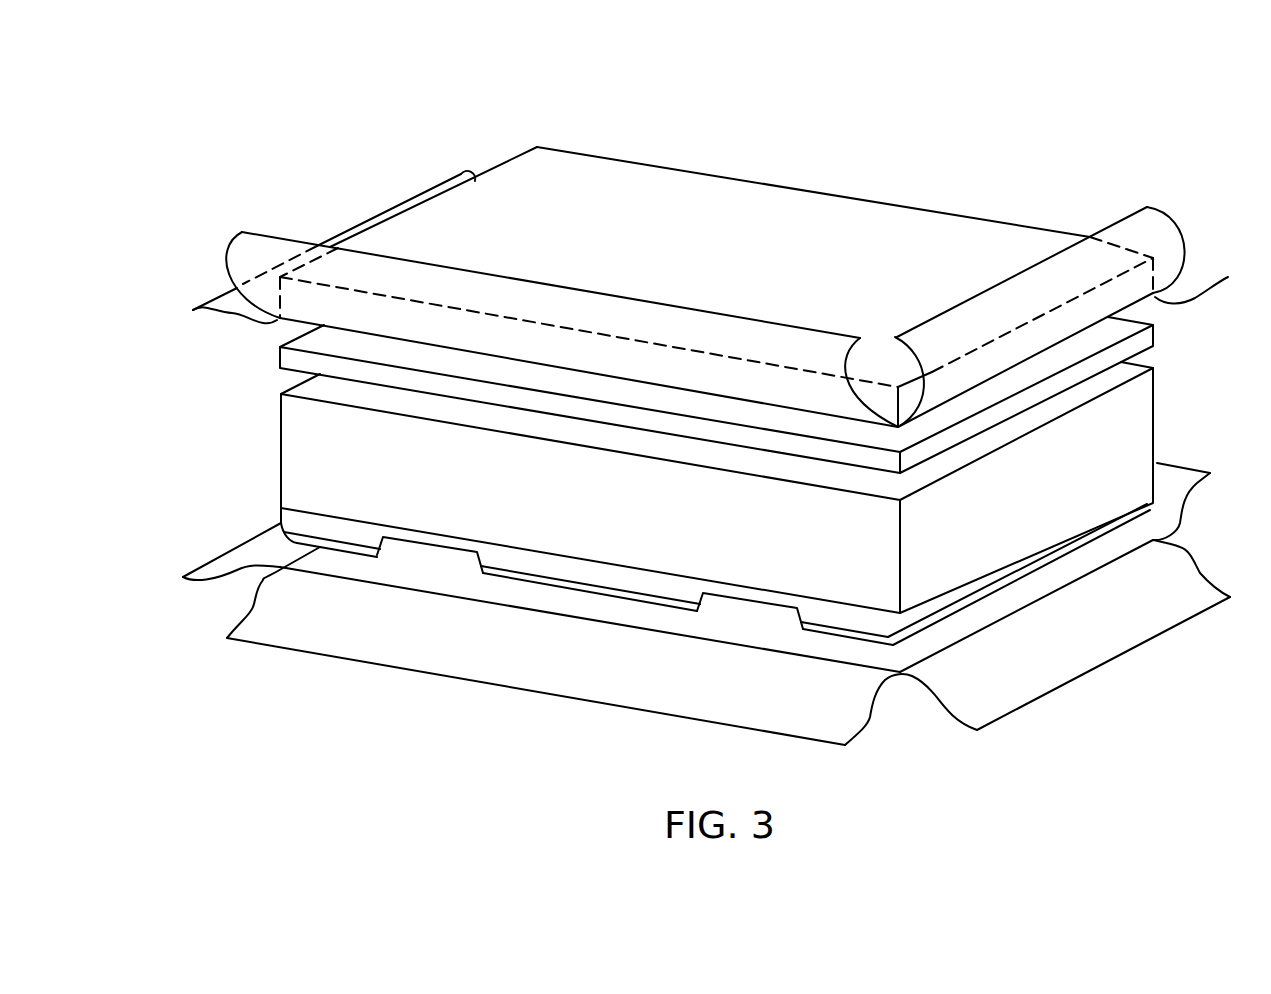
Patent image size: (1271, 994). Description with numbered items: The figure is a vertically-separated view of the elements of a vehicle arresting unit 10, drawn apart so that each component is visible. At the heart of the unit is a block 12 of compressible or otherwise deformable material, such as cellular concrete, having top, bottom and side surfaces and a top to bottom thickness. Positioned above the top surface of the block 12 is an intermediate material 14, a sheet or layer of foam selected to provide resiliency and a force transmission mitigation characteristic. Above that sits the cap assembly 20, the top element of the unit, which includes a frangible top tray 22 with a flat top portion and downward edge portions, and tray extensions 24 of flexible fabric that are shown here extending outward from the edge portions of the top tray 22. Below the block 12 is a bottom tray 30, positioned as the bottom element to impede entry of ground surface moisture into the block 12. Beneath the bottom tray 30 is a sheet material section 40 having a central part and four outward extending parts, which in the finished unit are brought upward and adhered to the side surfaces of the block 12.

The vehicle arresting unit 10 is at (931, 169).
The block 12 is at (1155, 433).
The intermediate material 14 is at (1155, 330).
The cap assembly 20 is at (746, 178).
The top tray 22 is at (537, 168).
The tray extensions 24 is at (198, 310).
The bottom tray 30 is at (279, 523).
The sheet material section 40 is at (870, 717).